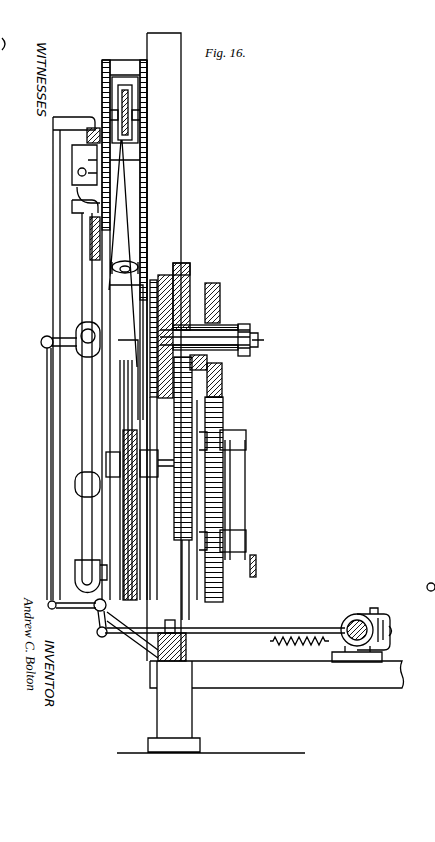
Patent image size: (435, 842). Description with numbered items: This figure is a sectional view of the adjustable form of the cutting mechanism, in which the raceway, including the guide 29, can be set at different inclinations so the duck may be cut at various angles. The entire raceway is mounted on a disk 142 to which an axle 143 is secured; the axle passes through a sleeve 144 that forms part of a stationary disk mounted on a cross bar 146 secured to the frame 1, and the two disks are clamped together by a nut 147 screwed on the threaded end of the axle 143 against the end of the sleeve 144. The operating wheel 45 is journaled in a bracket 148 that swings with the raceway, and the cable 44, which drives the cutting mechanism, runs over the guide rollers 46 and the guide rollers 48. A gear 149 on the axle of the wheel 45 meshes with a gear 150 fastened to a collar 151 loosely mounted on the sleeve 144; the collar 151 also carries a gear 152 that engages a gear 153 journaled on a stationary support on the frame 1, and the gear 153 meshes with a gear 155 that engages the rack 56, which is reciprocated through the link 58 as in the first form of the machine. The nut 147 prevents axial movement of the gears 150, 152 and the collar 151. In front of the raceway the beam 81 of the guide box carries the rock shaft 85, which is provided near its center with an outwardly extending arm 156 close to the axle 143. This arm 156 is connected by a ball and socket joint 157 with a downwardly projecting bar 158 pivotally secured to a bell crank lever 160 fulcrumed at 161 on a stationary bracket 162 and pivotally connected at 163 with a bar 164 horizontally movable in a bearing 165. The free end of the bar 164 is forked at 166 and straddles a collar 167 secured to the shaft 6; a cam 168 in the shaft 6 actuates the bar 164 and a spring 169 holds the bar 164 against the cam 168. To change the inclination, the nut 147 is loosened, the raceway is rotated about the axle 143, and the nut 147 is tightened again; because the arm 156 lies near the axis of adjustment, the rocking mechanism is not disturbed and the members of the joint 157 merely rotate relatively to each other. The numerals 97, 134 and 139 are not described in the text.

The frame 1 is at (182, 170).
The counter shaft 6 is at (356, 641).
The guide 29 is at (142, 208).
The cable 44 is at (120, 190).
The operating wheel 45 is at (122, 510).
The guide rollers 46 is at (125, 77).
The guide rollers 48 is at (125, 262).
The rack 56 is at (277, 665).
The link 58 is at (258, 566).
The beam 81 is at (40, 157).
The rock shaft 85 is at (80, 268).
The pin 97 is at (427, 586).
The bracket 134 is at (237, 500).
The pivot 139 is at (50, 602).
The disk 142 is at (163, 275).
The axle 143 is at (250, 332).
The sleeve 144 is at (224, 380).
The cross bar 146 is at (192, 285).
The nut 147 is at (258, 338).
The bracket 148 is at (118, 413).
The gear 149 is at (149, 488).
The gear 150 is at (186, 264).
The collar 151 is at (232, 330).
The gear 152 is at (222, 292).
The gear 153 is at (225, 410).
The gear 155 is at (232, 518).
The arm 156 is at (62, 335).
The ball and socket joint 157 is at (41, 340).
The bar 158 is at (45, 378).
The bell crank lever 160 is at (72, 609).
The fulcrum 161 is at (98, 618).
The stationary bracket 162 is at (152, 652).
The pivotal connection 163 is at (100, 638).
The bar 164 is at (283, 628).
The bearing 165 is at (170, 620).
The fork 166 is at (350, 618).
The collar 167 is at (375, 663).
The cam 168 is at (392, 636).
The spring 169 is at (305, 648).